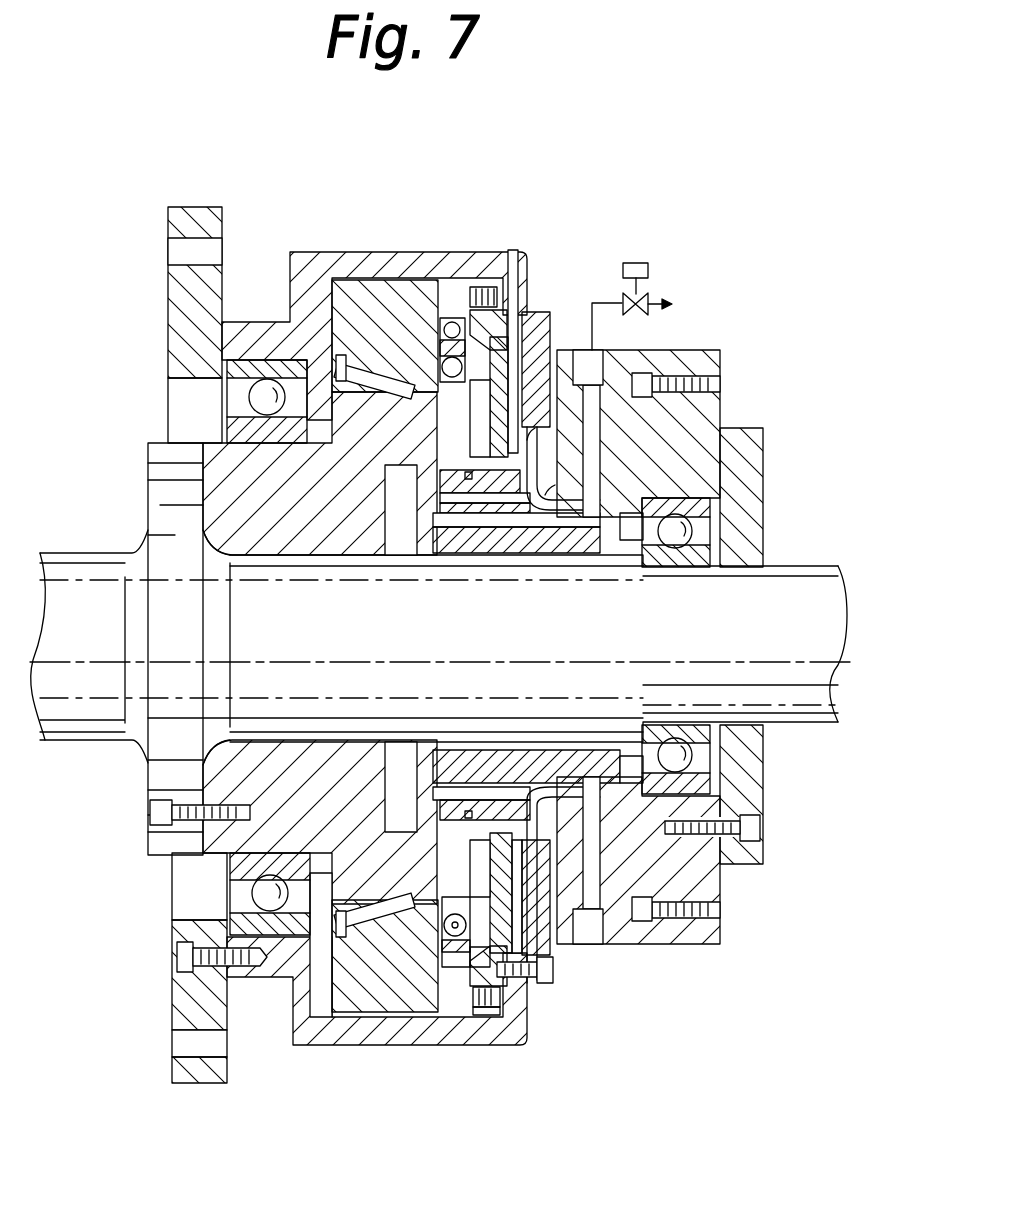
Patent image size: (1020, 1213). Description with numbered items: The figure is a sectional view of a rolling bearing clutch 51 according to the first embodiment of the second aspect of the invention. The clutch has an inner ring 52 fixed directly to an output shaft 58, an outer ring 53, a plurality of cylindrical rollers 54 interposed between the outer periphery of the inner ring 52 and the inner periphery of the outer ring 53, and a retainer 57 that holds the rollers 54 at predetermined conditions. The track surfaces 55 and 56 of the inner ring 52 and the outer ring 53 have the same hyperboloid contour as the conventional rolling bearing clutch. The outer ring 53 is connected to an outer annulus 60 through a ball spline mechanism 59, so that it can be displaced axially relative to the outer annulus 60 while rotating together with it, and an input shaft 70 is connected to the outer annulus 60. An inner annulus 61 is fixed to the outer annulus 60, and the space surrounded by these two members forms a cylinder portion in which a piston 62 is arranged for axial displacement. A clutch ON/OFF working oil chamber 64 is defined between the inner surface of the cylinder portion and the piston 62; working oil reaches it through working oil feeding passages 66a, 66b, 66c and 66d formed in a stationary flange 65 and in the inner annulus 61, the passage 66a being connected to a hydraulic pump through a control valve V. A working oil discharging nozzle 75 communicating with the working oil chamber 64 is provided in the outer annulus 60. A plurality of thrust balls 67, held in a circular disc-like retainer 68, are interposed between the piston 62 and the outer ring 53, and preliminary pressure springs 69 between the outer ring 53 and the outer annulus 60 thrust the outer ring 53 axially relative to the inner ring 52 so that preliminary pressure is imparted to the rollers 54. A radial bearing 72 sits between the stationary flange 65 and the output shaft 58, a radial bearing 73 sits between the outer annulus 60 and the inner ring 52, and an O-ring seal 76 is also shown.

The rolling bearing clutch 51 is at (364, 196).
The inner ring 52 is at (165, 866).
The outer ring 53 is at (388, 300).
The cylindrical rollers 54 is at (372, 1012).
The track surface 55 is at (297, 467).
The track surface 56 is at (452, 322).
The retainer 57 is at (288, 968).
The output shaft 58 is at (780, 590).
The ball spline mechanism 59 is at (500, 330).
The outer annulus 60 is at (306, 262).
The inner annulus 61 is at (553, 950).
The piston 62 is at (512, 335).
The clutch ON/OFF working oil chamber 64 is at (505, 375).
The stationary flange 65 is at (700, 362).
The working oil feeding passage 66a is at (555, 485).
The working oil feeding passage 66b is at (725, 452).
The working oil feeding passage 66c is at (535, 428).
The working oil feeding passage 66d is at (543, 338).
The thrust balls 67 is at (475, 968).
The retainer 68 is at (440, 935).
The preliminary pressure springs 69 is at (500, 1005).
The input shaft 70 is at (172, 212).
The radial bearing 72 is at (712, 515).
The radial bearing 73 is at (268, 372).
The working oil discharging nozzle 75 is at (520, 350).
The O-ring seal 76 is at (545, 985).
The control valve V is at (652, 292).